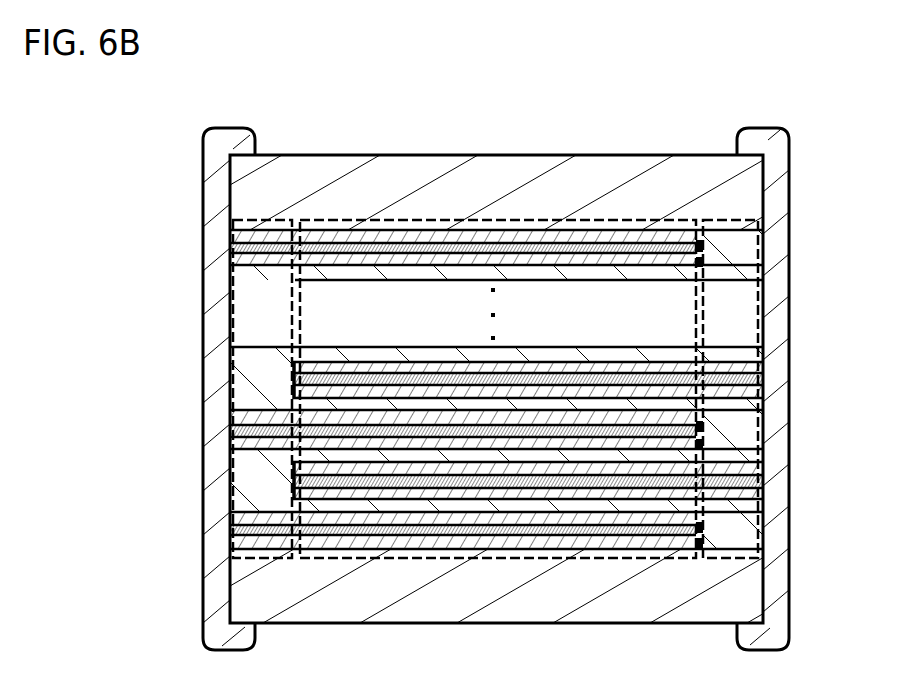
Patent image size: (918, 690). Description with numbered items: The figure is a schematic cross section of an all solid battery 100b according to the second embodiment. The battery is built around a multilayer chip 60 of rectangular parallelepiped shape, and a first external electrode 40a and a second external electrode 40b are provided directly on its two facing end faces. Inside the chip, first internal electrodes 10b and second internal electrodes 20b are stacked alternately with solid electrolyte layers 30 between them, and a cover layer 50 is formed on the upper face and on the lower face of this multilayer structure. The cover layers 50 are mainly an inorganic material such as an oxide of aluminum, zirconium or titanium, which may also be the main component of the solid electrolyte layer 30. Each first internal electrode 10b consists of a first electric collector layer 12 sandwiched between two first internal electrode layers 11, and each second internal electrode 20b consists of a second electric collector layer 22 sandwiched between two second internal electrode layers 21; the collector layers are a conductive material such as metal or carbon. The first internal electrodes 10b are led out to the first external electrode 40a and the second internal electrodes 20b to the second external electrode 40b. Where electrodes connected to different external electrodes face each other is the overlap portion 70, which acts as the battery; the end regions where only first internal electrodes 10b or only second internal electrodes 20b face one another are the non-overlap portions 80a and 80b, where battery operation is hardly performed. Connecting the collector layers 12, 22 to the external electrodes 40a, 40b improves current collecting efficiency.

The all solid battery 100b is at (893, 67).
The multilayer chip 60 is at (602, 137).
The cover layer 50 is at (490, 176).
The solid electrolyte layer 30 is at (393, 505).
The first internal electrode 10b is at (125, 363).
The first internal electrode layer 11 is at (240, 410).
The first electric collector layer 12 is at (238, 428).
The second internal electrode 20b is at (855, 432).
The second internal electrode layer 21 is at (760, 462).
The second electric collector layer 22 is at (763, 477).
The first external electrode 40a is at (202, 258).
The second external electrode 40b is at (790, 265).
The overlap portion 70 is at (387, 218).
The non-overlap portion 80a is at (262, 218).
The non-overlap portion 80b is at (725, 220).